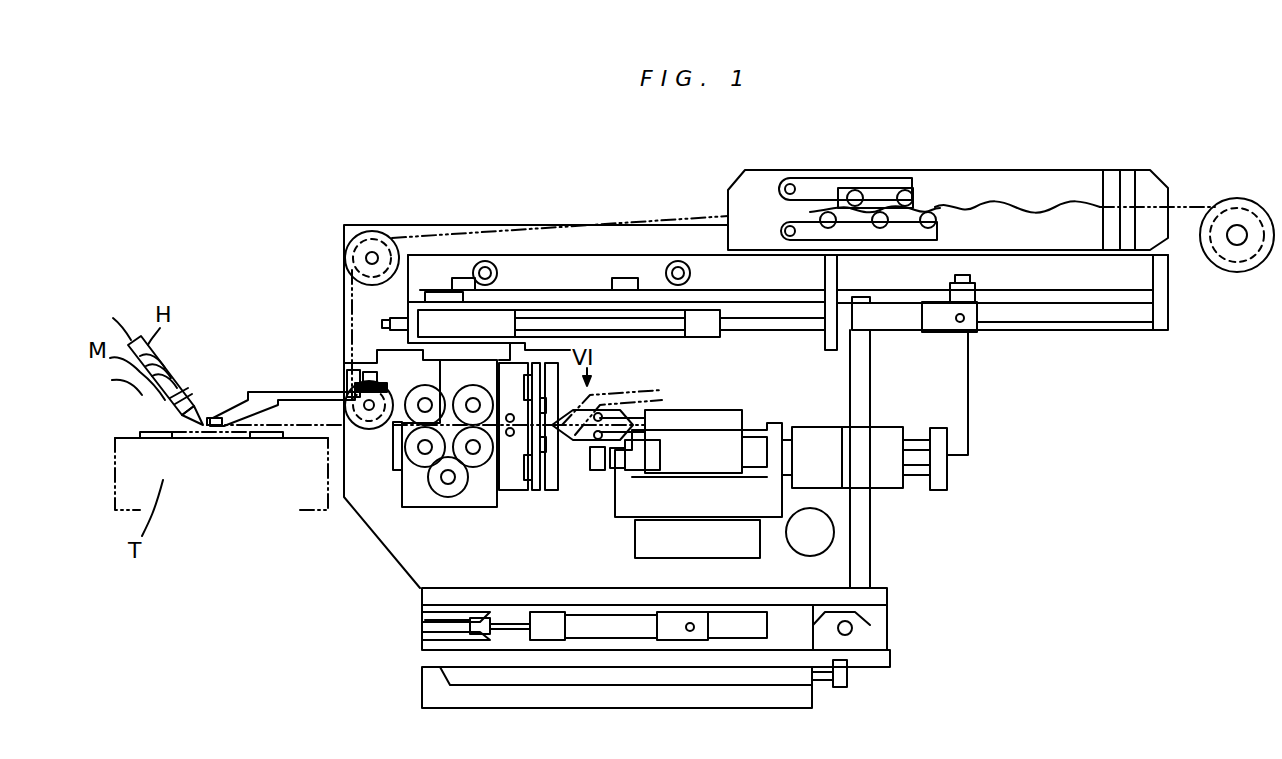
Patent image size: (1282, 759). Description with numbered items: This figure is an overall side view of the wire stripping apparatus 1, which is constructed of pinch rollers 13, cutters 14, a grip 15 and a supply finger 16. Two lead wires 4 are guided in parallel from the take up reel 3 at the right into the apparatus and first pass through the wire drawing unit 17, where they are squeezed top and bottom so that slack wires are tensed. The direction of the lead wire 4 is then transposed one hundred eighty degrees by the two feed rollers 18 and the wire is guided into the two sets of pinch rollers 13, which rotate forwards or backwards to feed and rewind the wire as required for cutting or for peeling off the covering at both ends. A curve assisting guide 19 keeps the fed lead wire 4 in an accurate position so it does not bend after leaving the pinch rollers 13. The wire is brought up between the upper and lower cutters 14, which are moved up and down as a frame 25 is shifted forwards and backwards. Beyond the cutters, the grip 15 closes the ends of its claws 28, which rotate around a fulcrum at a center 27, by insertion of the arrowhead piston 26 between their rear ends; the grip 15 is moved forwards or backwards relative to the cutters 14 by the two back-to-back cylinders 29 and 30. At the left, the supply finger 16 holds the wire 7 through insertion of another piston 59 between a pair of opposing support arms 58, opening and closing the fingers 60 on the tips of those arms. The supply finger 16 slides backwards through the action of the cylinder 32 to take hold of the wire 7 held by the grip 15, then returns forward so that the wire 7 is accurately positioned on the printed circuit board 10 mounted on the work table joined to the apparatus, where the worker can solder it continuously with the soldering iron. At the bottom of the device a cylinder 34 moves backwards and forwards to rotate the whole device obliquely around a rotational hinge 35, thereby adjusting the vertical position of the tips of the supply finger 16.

The wire stripping apparatus 1 is at (584, 200).
The take up reel 3 is at (1232, 212).
The lead wire 4 is at (1018, 202).
The wire 7 is at (252, 440).
The printed circuit board 10 is at (168, 428).
The pinch rollers 13 is at (478, 468).
The cutters 14 is at (535, 492).
The grip 15 is at (567, 390).
The supply finger 16 is at (247, 394).
The wire drawing unit 17 is at (870, 182).
The feed rollers 18 is at (372, 240).
The curve assisting guide 19 is at (393, 450).
The frame 25 is at (552, 490).
The arrowhead piston 26 is at (650, 410).
The center 27 is at (608, 410).
The claws 28 is at (572, 441).
The cylinder 29 is at (822, 440).
The cylinder 30 is at (893, 440).
The cylinder 32 is at (908, 322).
The cylinder 34 is at (612, 632).
The rotational hinge 35 is at (856, 628).
The support arms 58 is at (308, 392).
The piston 59 is at (358, 372).
The fingers 60 is at (222, 415).